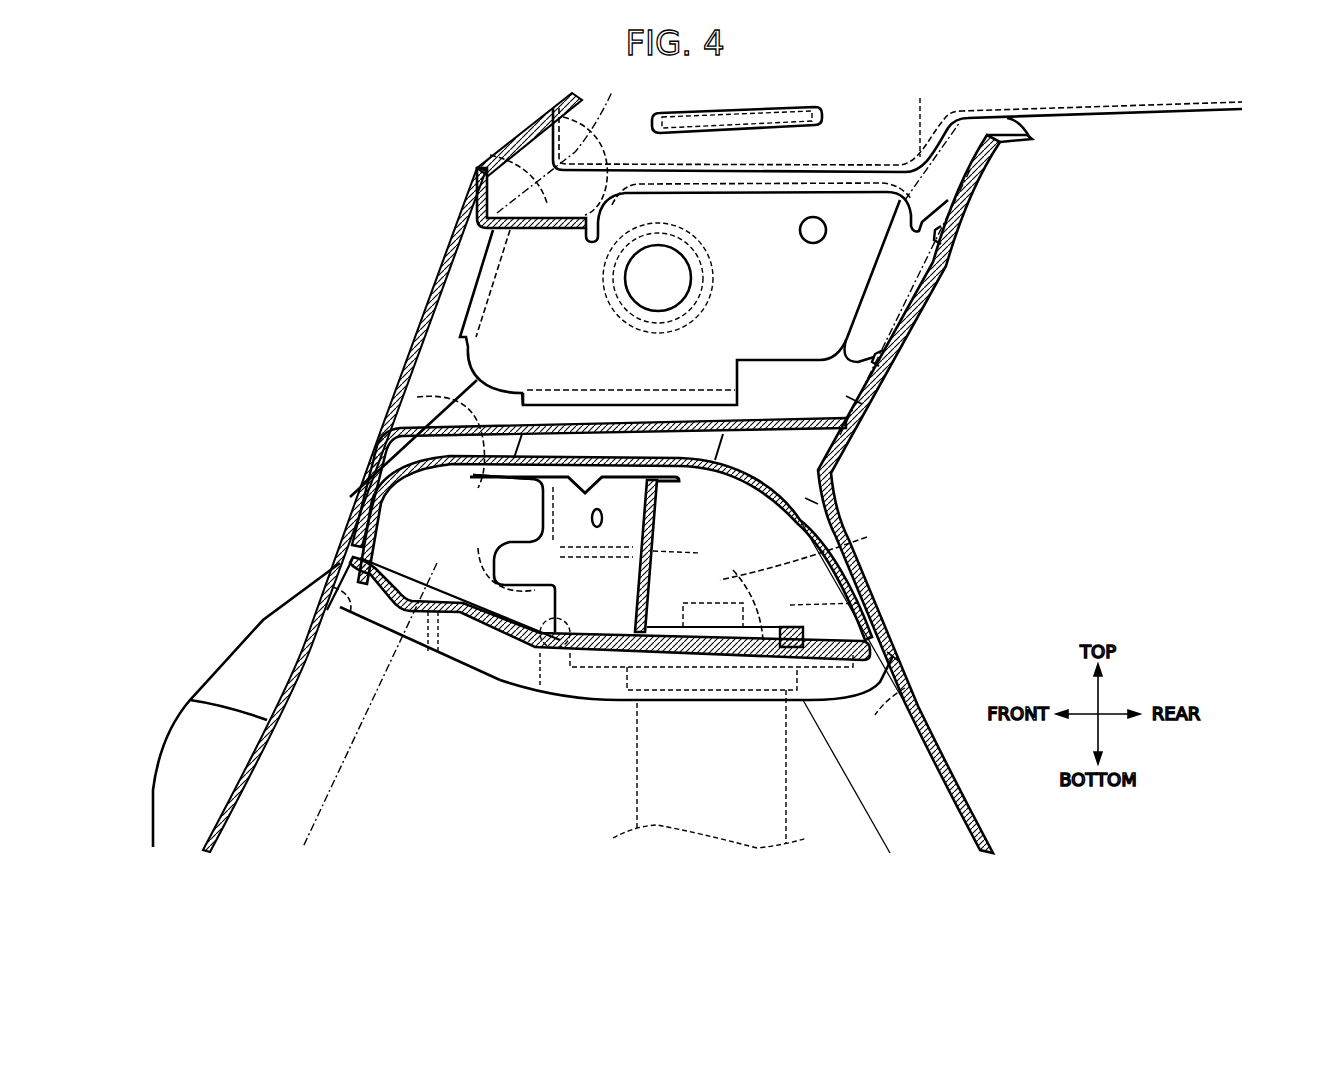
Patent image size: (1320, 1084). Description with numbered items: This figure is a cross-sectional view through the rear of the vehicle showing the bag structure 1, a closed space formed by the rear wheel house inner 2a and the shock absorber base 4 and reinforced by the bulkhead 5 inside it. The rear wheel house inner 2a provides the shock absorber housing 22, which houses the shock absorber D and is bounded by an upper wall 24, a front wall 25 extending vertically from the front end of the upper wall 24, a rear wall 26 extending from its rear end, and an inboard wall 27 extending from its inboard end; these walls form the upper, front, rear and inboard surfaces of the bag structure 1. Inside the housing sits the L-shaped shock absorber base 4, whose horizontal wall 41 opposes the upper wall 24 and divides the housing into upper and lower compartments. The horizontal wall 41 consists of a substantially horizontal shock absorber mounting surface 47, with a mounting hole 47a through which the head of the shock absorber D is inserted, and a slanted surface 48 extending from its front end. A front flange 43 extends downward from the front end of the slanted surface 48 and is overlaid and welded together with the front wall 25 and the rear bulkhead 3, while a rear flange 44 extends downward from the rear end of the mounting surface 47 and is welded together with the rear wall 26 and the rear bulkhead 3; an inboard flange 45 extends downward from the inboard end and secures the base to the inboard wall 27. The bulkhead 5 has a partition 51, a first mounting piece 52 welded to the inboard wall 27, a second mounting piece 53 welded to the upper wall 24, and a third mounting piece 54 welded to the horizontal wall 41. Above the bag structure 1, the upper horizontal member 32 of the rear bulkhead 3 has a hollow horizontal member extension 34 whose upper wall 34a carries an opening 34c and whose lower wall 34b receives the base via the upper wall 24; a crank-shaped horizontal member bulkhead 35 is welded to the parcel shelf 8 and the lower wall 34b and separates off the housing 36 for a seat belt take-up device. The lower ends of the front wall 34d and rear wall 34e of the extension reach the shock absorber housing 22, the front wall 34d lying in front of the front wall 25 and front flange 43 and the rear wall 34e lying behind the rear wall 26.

The bag structure 1 is at (774, 480).
The rear wheel house inner 2a is at (805, 498).
The shock absorber housing 22 is at (855, 616).
The rear bulkhead 3 is at (352, 490).
The shock absorber base 4 is at (642, 702).
The bulkhead 5 is at (566, 550).
The parcel shelf 8 is at (1085, 96).
The upper wall 24 is at (417, 397).
The front wall 25 is at (300, 635).
The rear wall 26 is at (960, 762).
The inboard wall 27 is at (809, 581).
The upper horizontal member 32 is at (942, 260).
The horizontal member extension 34 is at (599, 373).
The upper wall 34a is at (490, 152).
The lower wall 34b is at (852, 400).
The opening 34c is at (553, 118).
The front wall 34d is at (327, 578).
The rear wall 34e is at (900, 660).
The horizontal member bulkhead 35 is at (843, 283).
The housing 36 is at (507, 325).
The horizontal wall 41 is at (420, 643).
The front flange 43 is at (355, 598).
The rear flange 44 is at (905, 688).
The inboard flange 45 is at (578, 700).
The shock absorber mounting surface 47 is at (788, 675).
The mounting hole 47a is at (862, 608).
The slanted surface 48 is at (503, 683).
The partition 51 is at (645, 567).
The first mounting piece 52 is at (507, 543).
The second mounting piece 53 is at (488, 468).
The third mounting piece 54 is at (545, 683).
The shock absorber D is at (785, 768).